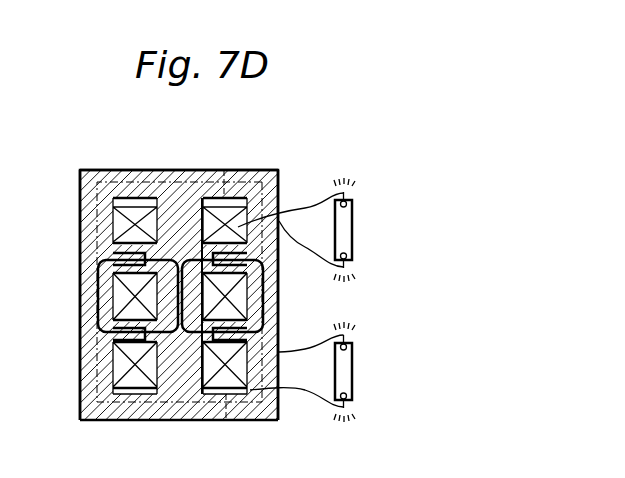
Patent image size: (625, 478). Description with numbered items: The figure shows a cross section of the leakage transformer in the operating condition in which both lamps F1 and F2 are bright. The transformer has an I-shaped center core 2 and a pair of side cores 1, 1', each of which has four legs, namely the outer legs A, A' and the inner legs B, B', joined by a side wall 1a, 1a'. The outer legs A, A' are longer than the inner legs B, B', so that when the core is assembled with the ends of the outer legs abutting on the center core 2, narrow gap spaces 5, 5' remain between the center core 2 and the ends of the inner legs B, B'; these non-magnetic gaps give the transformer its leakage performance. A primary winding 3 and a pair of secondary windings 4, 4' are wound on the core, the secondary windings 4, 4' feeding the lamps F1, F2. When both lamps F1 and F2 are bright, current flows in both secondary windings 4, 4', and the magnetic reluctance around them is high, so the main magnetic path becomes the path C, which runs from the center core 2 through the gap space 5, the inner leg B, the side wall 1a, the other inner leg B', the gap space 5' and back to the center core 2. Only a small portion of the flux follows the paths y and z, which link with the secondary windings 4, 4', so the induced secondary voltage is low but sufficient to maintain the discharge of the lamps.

The side core 1 is at (179, 272).
The side core 1' is at (289, 269).
The side wall 1a is at (152, 292).
The side wall 1a' is at (293, 292).
The center core 2 is at (197, 405).
The primary winding 3 is at (240, 302).
The secondary winding 4 is at (253, 284).
The secondary winding 4' is at (246, 401).
The gap space 5 is at (151, 191).
The gap space 5' is at (146, 399).
The outer leg A is at (162, 186).
The outer leg A' is at (97, 317).
The inner leg B is at (146, 258).
The inner leg B' is at (144, 339).
The main magnetic path C is at (98, 297).
The magnetic flux path y is at (223, 168).
The magnetic flux path z is at (226, 424).
The lamp F1 is at (357, 231).
The lamp F2 is at (366, 372).